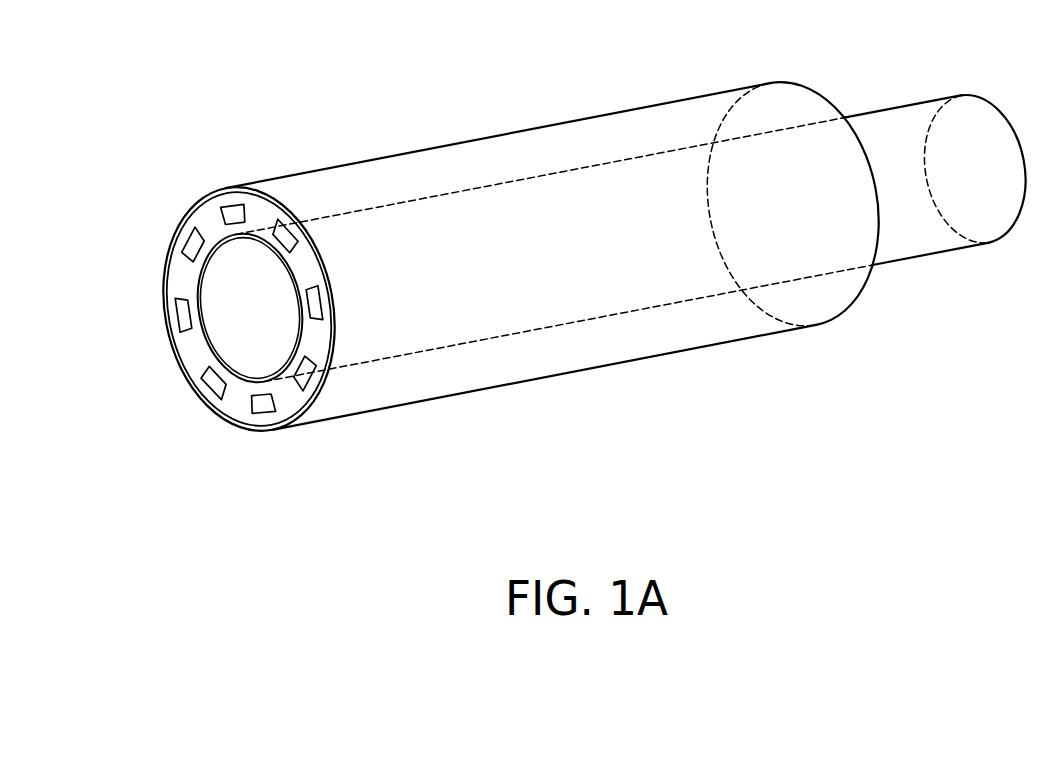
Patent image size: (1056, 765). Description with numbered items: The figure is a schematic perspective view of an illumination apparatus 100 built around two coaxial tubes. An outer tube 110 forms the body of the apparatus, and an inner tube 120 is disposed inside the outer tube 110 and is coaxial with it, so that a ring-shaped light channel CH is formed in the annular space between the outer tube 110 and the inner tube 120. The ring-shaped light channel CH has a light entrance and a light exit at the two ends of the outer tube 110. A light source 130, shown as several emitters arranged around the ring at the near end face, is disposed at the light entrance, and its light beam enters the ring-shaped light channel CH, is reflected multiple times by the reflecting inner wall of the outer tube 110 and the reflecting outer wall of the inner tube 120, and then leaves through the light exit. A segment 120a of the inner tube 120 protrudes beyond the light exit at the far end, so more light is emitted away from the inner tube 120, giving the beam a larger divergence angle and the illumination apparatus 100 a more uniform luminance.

The illumination apparatus 100 is at (584, 256).
The outer tube 110 is at (434, 147).
The inner tube 120 is at (631, 198).
The segment of the inner tube 120a is at (903, 107).
The light source 130 is at (231, 210).
The ring-shaped light channel CH is at (238, 402).